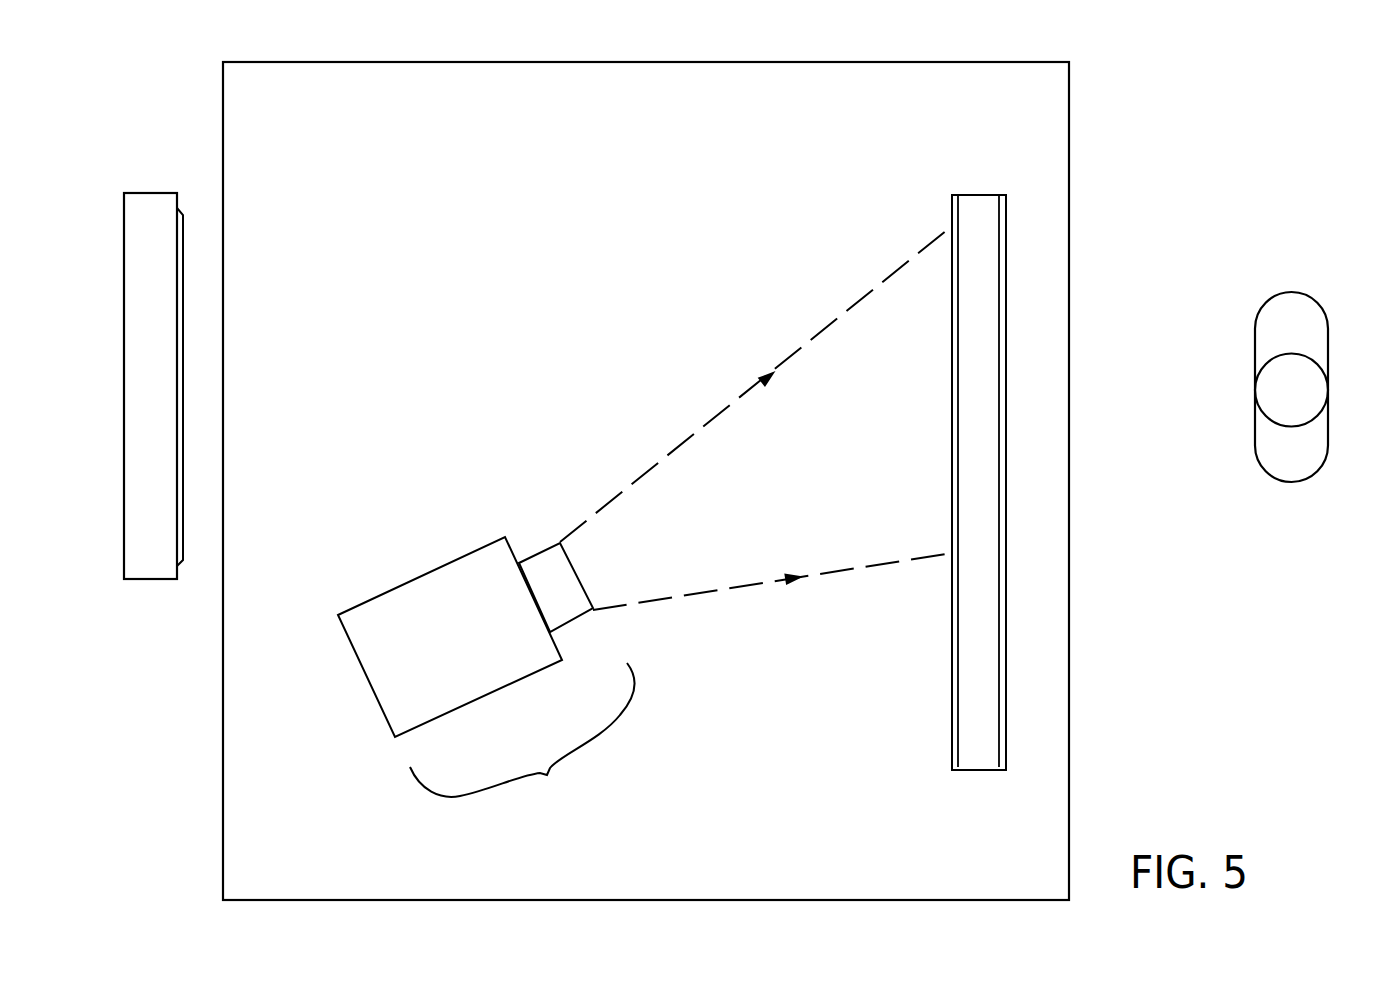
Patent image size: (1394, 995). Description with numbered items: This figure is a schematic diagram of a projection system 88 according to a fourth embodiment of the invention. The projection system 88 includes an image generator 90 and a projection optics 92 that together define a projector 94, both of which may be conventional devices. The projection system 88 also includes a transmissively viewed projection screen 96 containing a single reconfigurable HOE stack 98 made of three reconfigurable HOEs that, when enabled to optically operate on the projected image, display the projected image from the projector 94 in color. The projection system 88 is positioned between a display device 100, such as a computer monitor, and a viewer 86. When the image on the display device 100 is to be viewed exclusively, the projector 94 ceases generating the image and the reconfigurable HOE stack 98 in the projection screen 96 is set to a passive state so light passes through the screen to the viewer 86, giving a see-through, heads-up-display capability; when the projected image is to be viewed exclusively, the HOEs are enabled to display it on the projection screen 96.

The viewer 86 is at (1312, 308).
The projection system 88 is at (702, 74).
The image generator 90 is at (435, 597).
The projection optics 92 is at (545, 575).
The projector 94 is at (522, 736).
The projection screen 96 is at (1006, 250).
The reconfigurable HOE stack 98 is at (975, 202).
The display device 100 is at (140, 193).